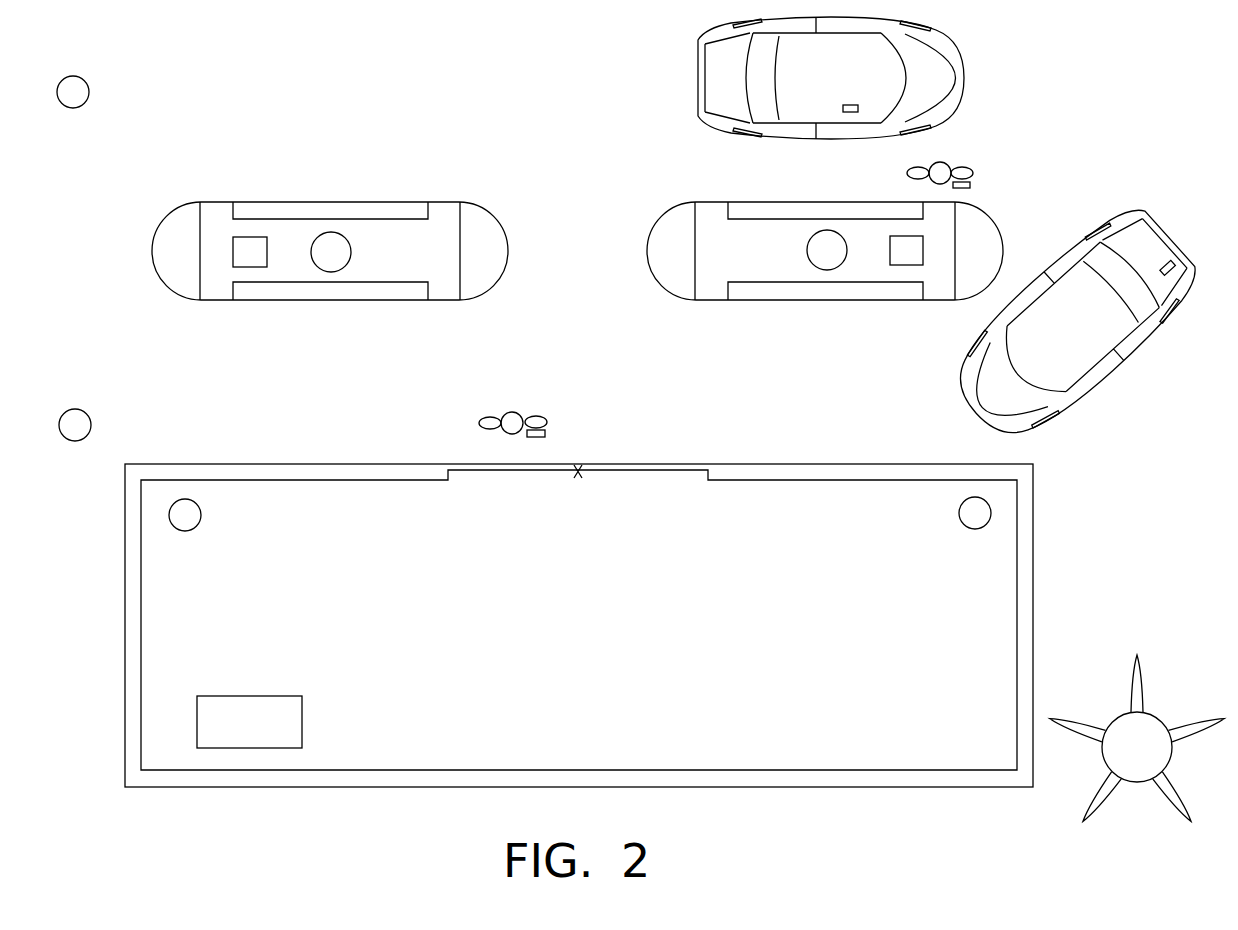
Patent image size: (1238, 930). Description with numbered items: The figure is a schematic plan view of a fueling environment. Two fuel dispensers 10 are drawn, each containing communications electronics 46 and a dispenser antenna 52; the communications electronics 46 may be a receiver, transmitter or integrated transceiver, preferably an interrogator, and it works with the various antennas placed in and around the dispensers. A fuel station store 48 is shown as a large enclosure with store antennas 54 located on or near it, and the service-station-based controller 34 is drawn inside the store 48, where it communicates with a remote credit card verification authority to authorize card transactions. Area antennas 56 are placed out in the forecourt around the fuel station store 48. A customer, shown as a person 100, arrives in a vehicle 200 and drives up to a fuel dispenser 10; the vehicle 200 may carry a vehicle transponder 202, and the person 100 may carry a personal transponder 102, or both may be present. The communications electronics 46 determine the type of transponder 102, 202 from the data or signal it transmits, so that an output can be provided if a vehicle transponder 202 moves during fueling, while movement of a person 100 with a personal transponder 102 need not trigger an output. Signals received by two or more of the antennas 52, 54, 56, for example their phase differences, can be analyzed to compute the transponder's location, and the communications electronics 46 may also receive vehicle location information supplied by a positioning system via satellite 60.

The fuel dispenser 10 is at (233, 192).
The service-station-based controller 34 is at (261, 732).
The communications electronics 46 is at (250, 268).
The fuel station store 48 is at (805, 464).
The dispenser antenna 52 is at (348, 262).
The store antenna 54 is at (172, 506).
The area antenna 56 is at (88, 82).
The satellite 60 is at (1127, 710).
The person 100 is at (947, 163).
The personal transponder 102 is at (970, 186).
The vehicle 200 is at (953, 43).
The vehicle transponder 202 is at (858, 106).